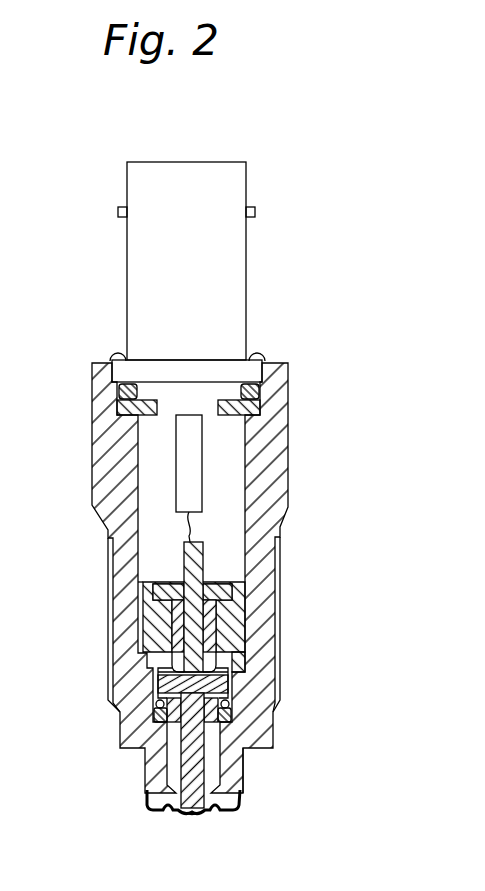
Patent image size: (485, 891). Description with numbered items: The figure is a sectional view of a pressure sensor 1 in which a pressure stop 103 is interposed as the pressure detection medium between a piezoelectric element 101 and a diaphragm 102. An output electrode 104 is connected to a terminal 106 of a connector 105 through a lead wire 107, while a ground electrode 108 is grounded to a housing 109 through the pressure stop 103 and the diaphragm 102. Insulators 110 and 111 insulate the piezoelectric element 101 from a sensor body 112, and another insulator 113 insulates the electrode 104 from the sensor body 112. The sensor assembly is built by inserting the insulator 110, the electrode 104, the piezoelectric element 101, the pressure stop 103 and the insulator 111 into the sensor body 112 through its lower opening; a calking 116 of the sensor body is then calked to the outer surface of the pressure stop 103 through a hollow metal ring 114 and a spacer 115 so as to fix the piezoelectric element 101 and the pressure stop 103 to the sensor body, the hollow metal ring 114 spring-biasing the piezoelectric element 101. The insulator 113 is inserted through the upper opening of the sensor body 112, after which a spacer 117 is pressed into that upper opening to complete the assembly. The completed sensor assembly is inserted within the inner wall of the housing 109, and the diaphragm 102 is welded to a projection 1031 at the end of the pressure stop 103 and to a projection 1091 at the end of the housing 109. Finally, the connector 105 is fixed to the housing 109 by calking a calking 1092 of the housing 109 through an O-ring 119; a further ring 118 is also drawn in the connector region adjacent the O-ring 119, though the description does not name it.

The pressure detecting device 1 is at (253, 258).
The piezoelectric element 101 is at (230, 680).
The diaphragm 102 is at (152, 810).
The projection 1031 is at (195, 814).
The pressure stop 103 is at (200, 762).
The output electrode 104 is at (185, 626).
The connector 105 is at (246, 333).
The terminal 106 is at (178, 457).
The lead wire 107 is at (170, 520).
The ground electrode 108 is at (147, 750).
The housing 109 is at (268, 740).
The projection 1091 is at (238, 813).
The calking 1092 is at (114, 354).
The insulator 110 is at (178, 668).
The insulator 111 is at (240, 655).
The sensor body 112 is at (236, 617).
The insulator 113 is at (170, 606).
The hollow metal ring 114 is at (232, 712).
The spacer 115 is at (156, 705).
The calking 116 is at (150, 731).
The spacer 117 is at (219, 578).
The ring 118 is at (252, 413).
The O-ring 119 is at (263, 390).